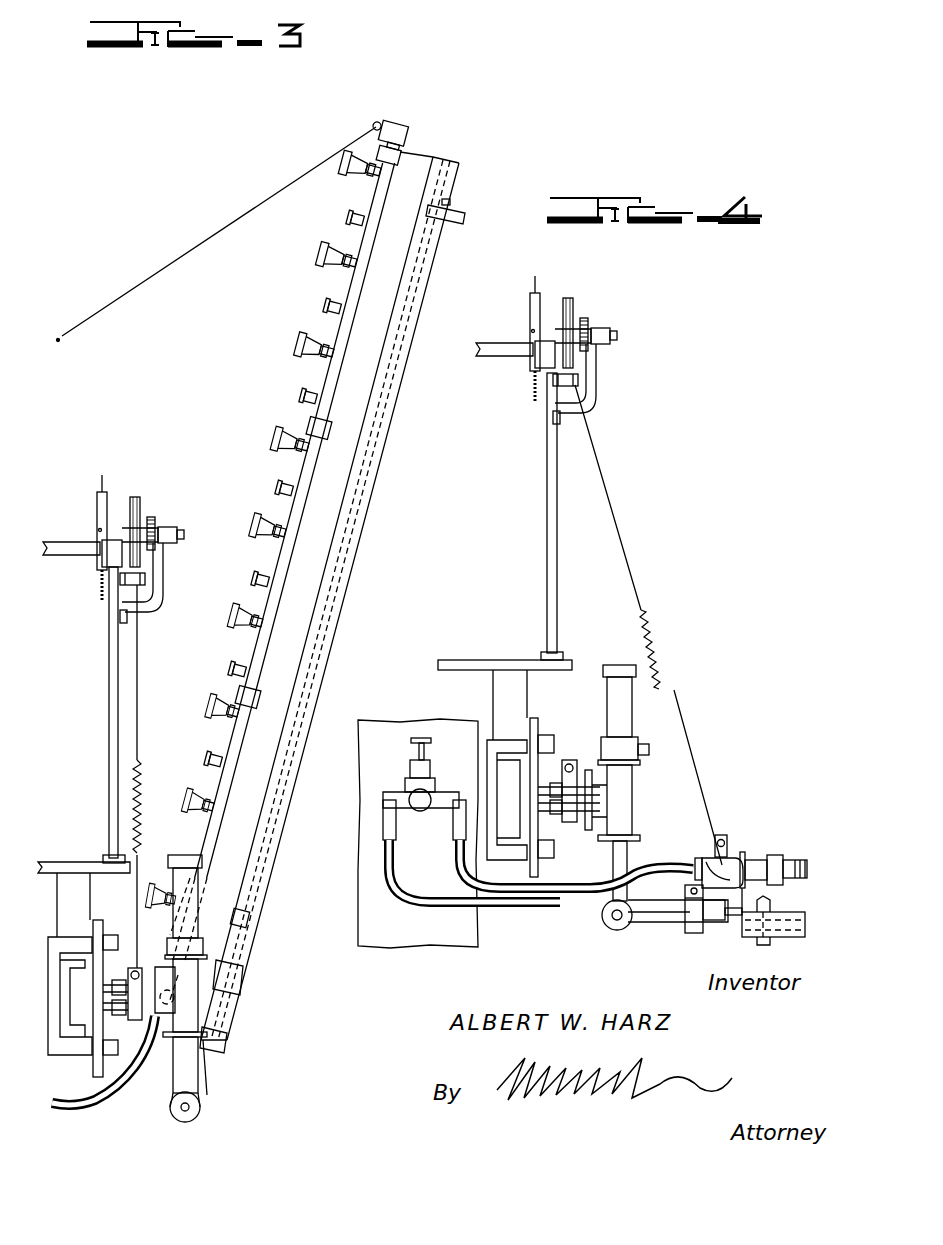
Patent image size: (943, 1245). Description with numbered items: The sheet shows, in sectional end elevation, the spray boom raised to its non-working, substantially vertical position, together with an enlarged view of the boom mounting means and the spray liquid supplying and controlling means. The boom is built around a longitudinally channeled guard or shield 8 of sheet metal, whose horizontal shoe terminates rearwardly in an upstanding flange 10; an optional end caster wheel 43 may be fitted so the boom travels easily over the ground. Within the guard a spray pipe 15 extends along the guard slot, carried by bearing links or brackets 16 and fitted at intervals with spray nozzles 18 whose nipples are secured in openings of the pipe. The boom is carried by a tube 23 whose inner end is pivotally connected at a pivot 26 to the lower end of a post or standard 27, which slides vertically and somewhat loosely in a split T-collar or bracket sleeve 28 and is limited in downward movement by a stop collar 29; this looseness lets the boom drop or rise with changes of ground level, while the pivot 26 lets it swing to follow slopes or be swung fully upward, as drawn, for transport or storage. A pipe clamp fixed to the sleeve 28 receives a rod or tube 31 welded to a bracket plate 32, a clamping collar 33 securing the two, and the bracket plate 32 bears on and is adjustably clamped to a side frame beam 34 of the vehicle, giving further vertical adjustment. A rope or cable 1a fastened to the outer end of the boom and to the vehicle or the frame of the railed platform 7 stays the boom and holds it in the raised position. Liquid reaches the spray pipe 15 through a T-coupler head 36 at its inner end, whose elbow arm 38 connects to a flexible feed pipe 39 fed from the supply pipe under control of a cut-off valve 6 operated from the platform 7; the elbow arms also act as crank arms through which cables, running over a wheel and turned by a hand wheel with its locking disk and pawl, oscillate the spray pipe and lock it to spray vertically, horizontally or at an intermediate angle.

In FIG. 3, the rope or cable 1a is at (197, 242).
In FIG. 4, the controlling and cut-off valve 6 is at (436, 733).
In FIG. 3, the railed platform 7 is at (87, 860).
In FIG. 4, the railed platform 7 is at (546, 550).
In FIG. 3, the channeled guard or shield 8 is at (372, 405).
In FIG. 4, the channeled guard or shield 8 is at (712, 932).
In FIG. 4, the upstanding flange 10 is at (795, 918).
In FIG. 3, the spray pipe 15 is at (330, 372).
In FIG. 4, the spray pipe 15 is at (797, 857).
In FIG. 3, the bearing links or brackets 16 is at (308, 427).
In FIG. 3, the spray nozzles 18 is at (312, 262).
In FIG. 4, the second tube 23 is at (650, 926).
In FIG. 3, the pivot 26 is at (201, 1106).
In FIG. 4, the pivot 26 is at (601, 925).
In FIG. 3, the post or standard 27 is at (200, 886).
In FIG. 4, the post or standard 27 is at (607, 715).
In FIG. 3, the split T-collar or bracket sleeve 28 is at (205, 1005).
In FIG. 4, the split T-collar or bracket sleeve 28 is at (622, 792).
In FIG. 3, the stop collar 29 is at (190, 942).
In FIG. 4, the stop collar 29 is at (622, 745).
In FIG. 3, the rod or tube 31 is at (115, 997).
In FIG. 4, the rod or tube 31 is at (545, 800).
In FIG. 3, the bracket plate 32 is at (100, 924).
In FIG. 4, the bracket plate 32 is at (534, 726).
In FIG. 3, the clamping collar 33 is at (135, 994).
In FIG. 4, the clamping collar 33 is at (568, 826).
In FIG. 3, the side frame beam 34 is at (85, 996).
In FIG. 4, the side frame beam 34 is at (519, 771).
In FIG. 4, the T-coupler head 36 is at (742, 856).
In FIG. 4, the elbow arm 38 is at (705, 860).
In FIG. 3, the feed pipe 39 is at (80, 1096).
In FIG. 4, the feed pipe 39 is at (448, 880).
In FIG. 3, the caster wheel 43 is at (466, 213).